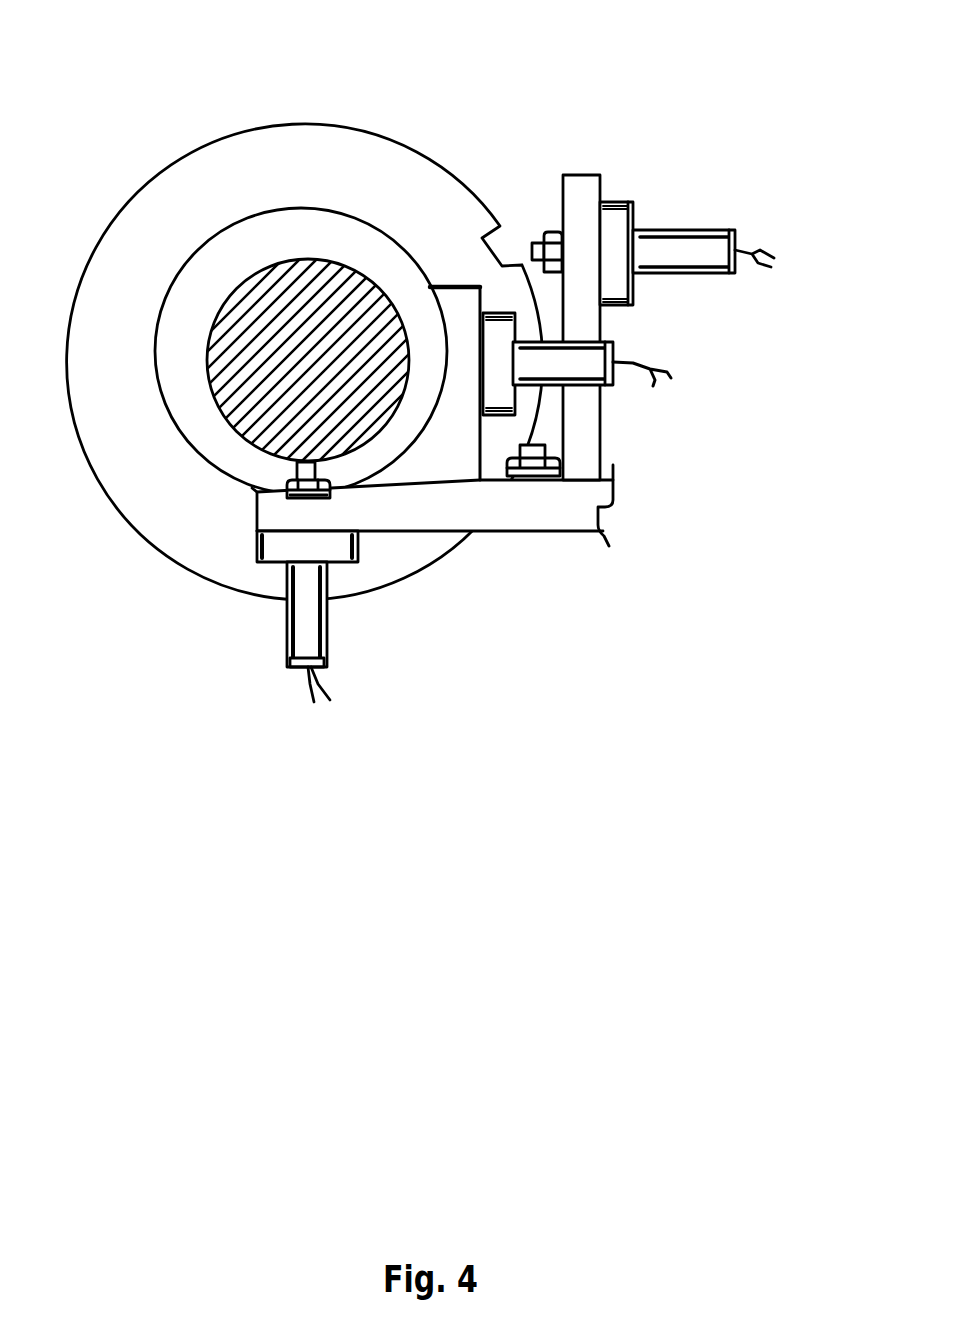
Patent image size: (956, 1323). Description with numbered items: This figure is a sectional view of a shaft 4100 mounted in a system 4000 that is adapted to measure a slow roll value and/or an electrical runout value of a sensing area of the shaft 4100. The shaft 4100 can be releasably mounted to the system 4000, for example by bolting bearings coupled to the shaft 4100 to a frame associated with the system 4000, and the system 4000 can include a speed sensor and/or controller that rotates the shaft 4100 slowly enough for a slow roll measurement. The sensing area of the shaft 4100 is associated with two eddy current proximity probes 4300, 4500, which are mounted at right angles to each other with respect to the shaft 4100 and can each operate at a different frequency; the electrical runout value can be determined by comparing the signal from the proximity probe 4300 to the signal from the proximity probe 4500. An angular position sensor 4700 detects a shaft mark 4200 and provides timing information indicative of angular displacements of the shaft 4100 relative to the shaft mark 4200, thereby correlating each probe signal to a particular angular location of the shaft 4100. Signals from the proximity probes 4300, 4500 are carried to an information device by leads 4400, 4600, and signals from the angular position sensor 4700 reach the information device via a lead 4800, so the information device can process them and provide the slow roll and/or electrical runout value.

The system 4000 is at (247, 46).
The shaft 4100 is at (143, 184).
The shaft mark 4200 is at (512, 256).
The proximity probe 4300 is at (618, 343).
The lead 4400 is at (665, 371).
The proximity probe 4500 is at (281, 646).
The lead 4600 is at (327, 694).
The angular position sensor 4700 is at (718, 232).
The lead 4800 is at (758, 248).